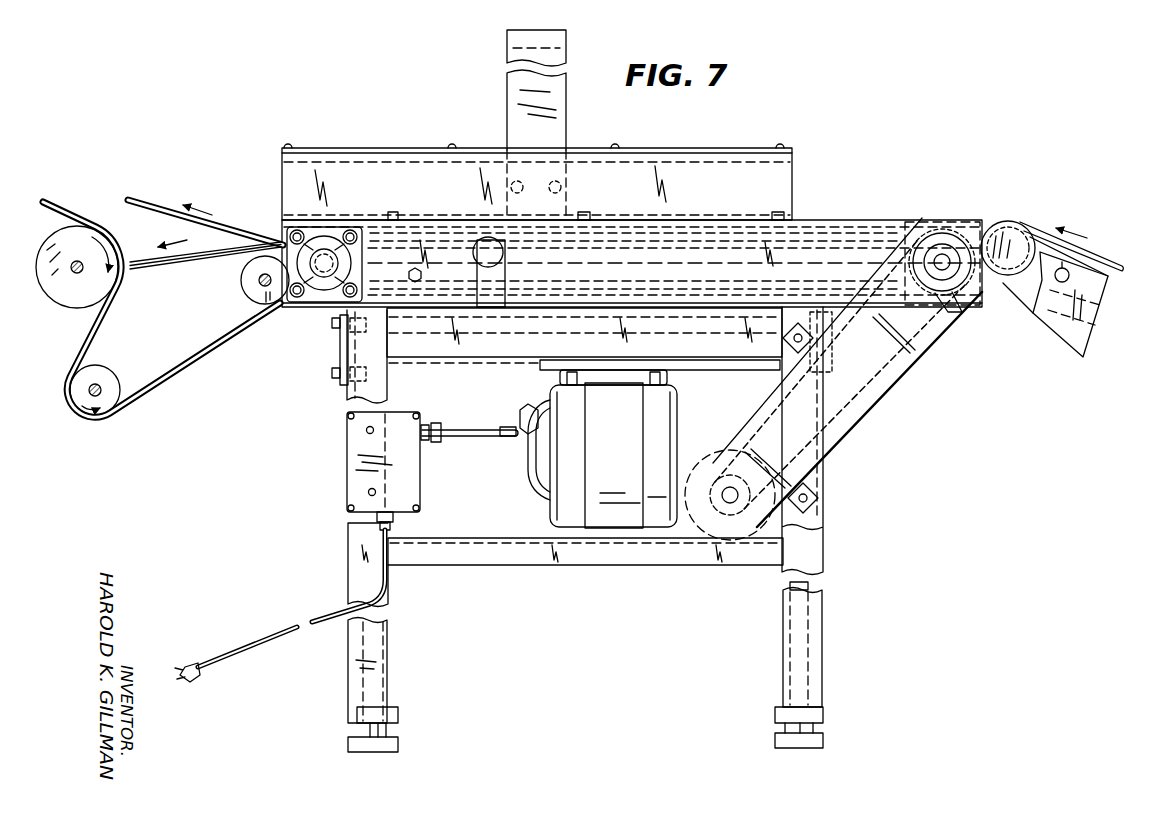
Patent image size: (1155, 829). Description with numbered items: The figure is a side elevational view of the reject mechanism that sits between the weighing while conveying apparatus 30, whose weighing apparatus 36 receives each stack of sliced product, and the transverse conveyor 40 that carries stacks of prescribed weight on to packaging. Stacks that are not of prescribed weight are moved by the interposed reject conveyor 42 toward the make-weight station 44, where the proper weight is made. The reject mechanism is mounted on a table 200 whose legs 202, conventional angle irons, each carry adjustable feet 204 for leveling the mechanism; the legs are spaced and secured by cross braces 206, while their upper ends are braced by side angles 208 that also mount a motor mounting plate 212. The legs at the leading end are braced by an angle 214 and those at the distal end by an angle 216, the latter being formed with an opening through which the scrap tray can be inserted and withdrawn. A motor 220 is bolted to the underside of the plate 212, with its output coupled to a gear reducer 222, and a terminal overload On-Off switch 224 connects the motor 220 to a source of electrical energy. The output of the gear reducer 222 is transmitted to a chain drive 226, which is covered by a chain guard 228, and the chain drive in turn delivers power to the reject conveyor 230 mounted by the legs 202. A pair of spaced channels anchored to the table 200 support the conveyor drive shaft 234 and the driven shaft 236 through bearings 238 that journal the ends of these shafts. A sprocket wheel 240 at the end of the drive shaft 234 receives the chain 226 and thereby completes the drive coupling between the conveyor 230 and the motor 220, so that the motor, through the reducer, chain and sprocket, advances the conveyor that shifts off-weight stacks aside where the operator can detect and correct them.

The weighing while conveying apparatus 30 is at (1025, 213).
The weighing apparatus 36 is at (1103, 257).
The transverse conveyor 40 is at (145, 199).
The reject conveyor 42 is at (808, 163).
The make-weight station 44 is at (167, 268).
The table 200 is at (829, 496).
The legs 202 is at (388, 674).
The adjustable feet 204 is at (398, 744).
The cross braces 206 is at (662, 566).
The side angles 208 is at (462, 368).
The motor mounting plate 212 is at (694, 372).
The angle 214 is at (837, 345).
The angle 216 is at (340, 355).
The motor 220 is at (566, 528).
The gear reducer 222 is at (690, 428).
The terminal overload On-Off switch 224 is at (422, 497).
The chain drive 226 is at (865, 405).
The chain guard 228 is at (840, 448).
The reject conveyor 230 is at (826, 230).
The conveyor drive shaft 234 is at (953, 222).
The driven shaft 236 is at (315, 310).
The bearings 238 is at (942, 258).
The sprocket wheel 240 is at (957, 304).